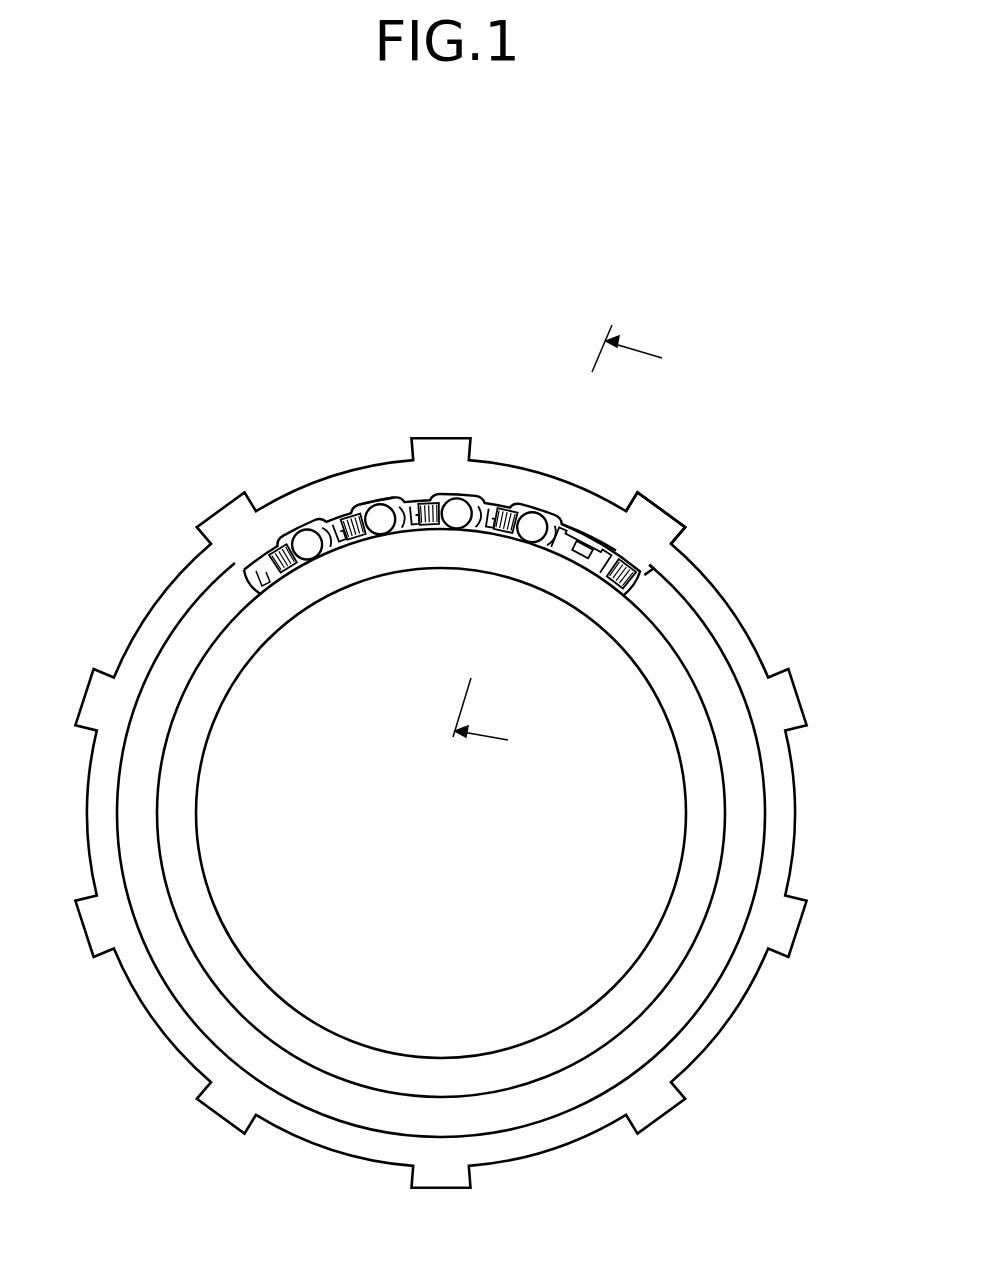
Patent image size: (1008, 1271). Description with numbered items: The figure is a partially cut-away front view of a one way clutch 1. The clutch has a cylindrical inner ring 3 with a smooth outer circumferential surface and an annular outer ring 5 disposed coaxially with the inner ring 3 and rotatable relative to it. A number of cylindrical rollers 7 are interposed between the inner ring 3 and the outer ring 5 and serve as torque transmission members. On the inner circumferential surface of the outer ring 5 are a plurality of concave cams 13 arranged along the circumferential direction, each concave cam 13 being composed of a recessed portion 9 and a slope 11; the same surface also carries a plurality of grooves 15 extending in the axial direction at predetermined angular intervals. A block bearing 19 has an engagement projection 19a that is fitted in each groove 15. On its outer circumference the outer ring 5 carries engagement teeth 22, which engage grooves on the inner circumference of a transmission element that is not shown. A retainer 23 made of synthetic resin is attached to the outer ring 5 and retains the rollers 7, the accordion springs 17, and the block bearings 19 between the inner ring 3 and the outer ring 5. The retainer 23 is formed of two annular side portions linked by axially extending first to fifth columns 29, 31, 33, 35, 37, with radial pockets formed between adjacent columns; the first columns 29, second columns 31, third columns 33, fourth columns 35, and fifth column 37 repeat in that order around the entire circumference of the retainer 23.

The one way clutch 1 is at (741, 341).
The inner ring 3 is at (190, 768).
The outer ring 5 is at (255, 538).
The cylindrical rollers 7 is at (458, 510).
The recessed portion 9 is at (362, 507).
The slope 11 is at (393, 504).
The concave cam 13 is at (369, 495).
The groove 15 is at (587, 533).
The accordion spring 17 is at (433, 517).
The block bearing 19 is at (583, 567).
The engagement projection 19a is at (598, 540).
The engagement teeth 22 is at (660, 520).
The retainer 23 is at (667, 603).
The first column 29 is at (277, 577).
The second column 31 is at (340, 547).
The third column 33 is at (413, 533).
The fourth column 35 is at (487, 533).
The fifth column 37 is at (547, 547).